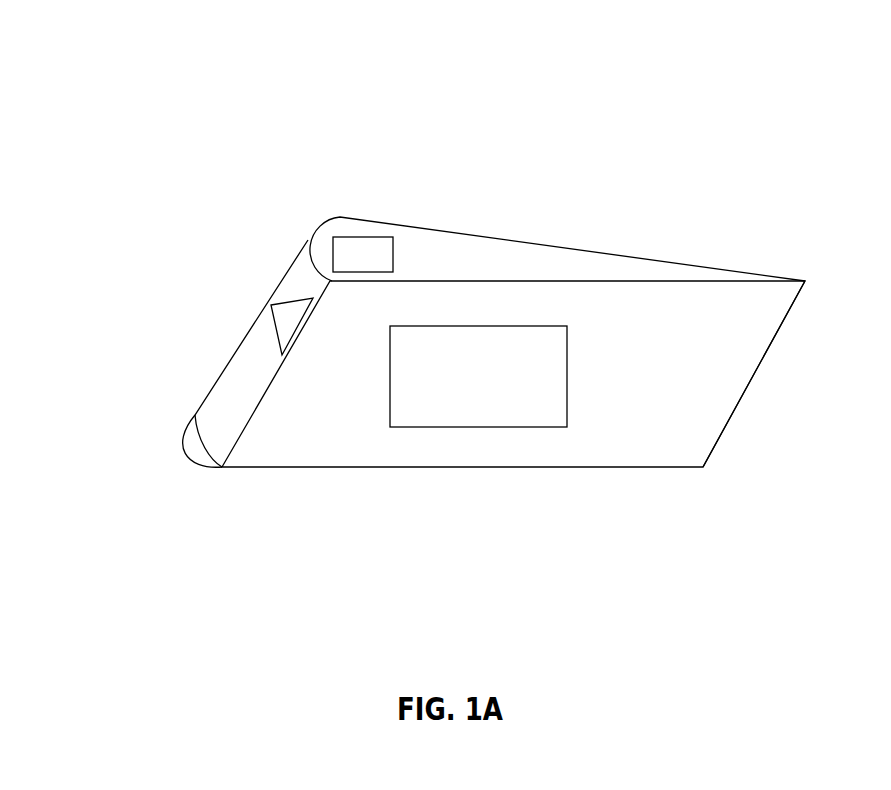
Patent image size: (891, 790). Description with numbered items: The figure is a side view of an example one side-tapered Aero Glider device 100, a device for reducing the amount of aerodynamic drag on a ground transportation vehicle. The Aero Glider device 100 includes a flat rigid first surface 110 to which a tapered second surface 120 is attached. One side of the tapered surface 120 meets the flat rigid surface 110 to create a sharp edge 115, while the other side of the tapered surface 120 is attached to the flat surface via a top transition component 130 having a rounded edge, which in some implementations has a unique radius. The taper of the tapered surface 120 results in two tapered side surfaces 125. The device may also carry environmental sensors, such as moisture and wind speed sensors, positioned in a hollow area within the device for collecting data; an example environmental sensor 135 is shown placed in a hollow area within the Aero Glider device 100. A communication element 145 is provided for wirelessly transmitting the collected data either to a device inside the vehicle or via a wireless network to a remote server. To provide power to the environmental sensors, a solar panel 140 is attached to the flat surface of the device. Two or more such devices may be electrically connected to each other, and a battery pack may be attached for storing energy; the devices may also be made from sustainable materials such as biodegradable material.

The Aero Glider device 100 is at (115, 119).
The flat rigid first surface 110 is at (682, 443).
The sharp edge 115 is at (797, 295).
The tapered second surface 120 is at (402, 223).
The tapered side surfaces 125 is at (457, 267).
The top transition component 130 is at (223, 386).
The environmental sensor 135 is at (362, 237).
The solar panel 140 is at (479, 428).
The communication element 145 is at (299, 297).